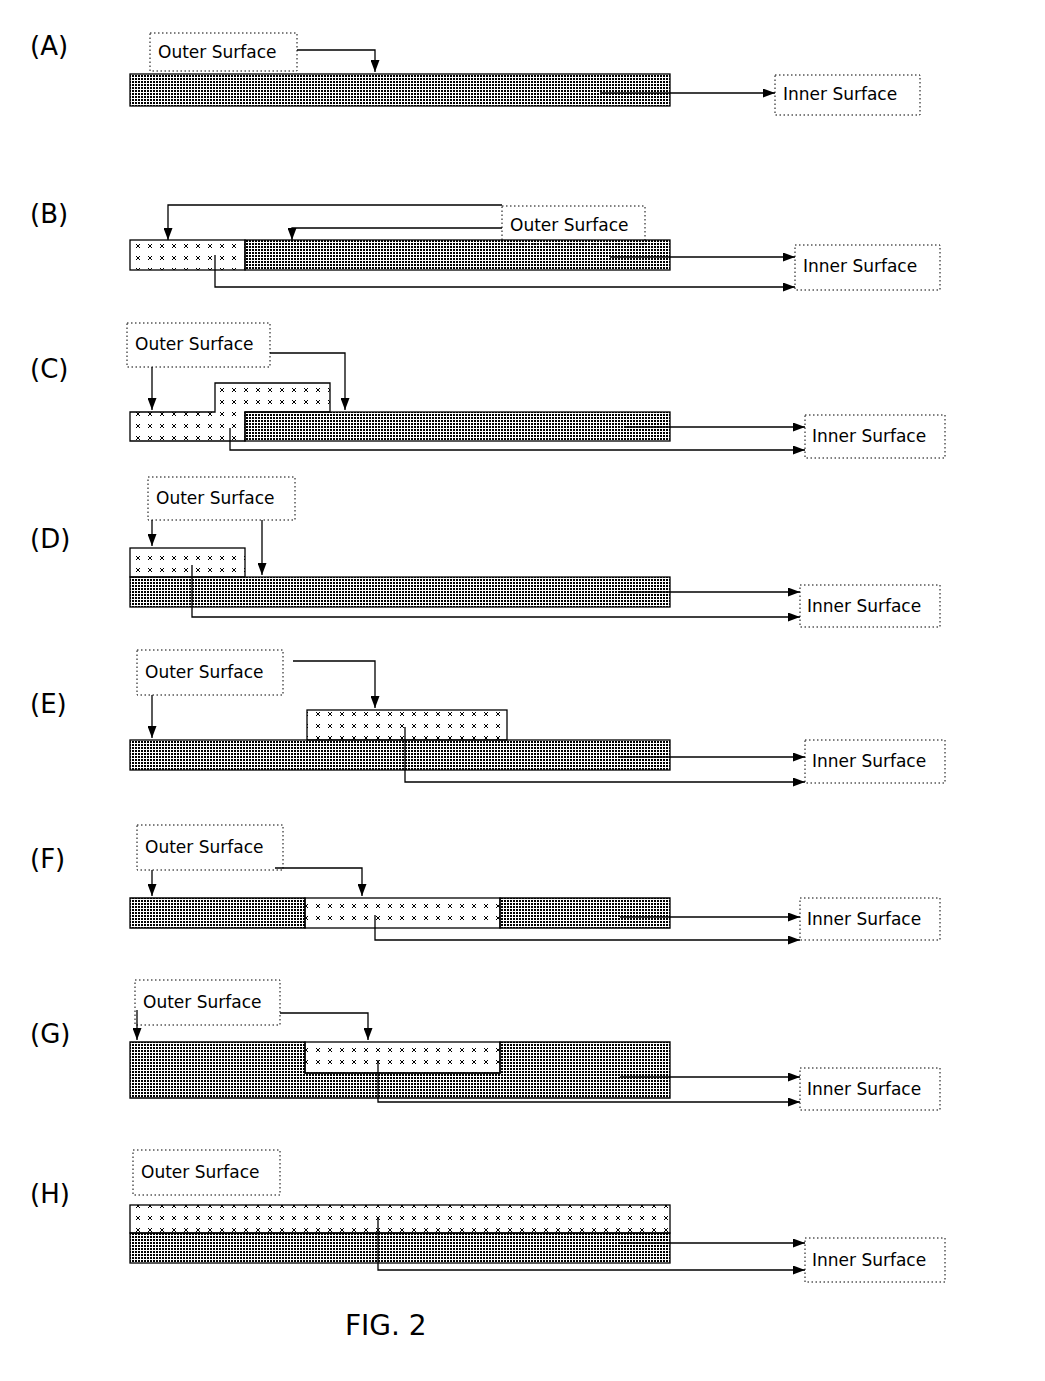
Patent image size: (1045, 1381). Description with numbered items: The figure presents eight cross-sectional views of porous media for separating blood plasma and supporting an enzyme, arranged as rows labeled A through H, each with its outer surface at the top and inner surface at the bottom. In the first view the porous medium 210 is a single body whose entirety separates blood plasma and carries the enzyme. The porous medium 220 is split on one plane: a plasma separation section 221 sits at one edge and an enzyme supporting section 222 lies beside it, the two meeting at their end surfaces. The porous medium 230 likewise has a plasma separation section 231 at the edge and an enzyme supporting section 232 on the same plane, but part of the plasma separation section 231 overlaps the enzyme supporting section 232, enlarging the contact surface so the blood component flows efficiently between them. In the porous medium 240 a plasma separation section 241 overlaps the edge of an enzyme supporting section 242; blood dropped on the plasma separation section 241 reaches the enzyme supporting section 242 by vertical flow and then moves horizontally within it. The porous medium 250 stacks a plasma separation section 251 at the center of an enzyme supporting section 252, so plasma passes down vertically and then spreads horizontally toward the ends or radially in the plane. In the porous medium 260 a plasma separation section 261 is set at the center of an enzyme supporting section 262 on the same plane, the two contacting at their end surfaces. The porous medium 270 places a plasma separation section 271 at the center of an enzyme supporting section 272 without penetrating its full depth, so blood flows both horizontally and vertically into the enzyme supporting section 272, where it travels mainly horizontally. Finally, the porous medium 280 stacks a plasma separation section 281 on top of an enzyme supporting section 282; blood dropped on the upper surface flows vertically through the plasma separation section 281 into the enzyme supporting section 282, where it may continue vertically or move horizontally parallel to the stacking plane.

The porous medium 210 is at (658, 59).
The porous medium 220 is at (451, 221).
The plasma separation section 221 is at (183, 240).
The enzyme supporting section 222 is at (378, 240).
The porous medium 230 is at (451, 381).
The plasma separation section 231 is at (245, 385).
The enzyme supporting section 232 is at (440, 412).
The porous medium 240 is at (451, 549).
The plasma separation section 241 is at (245, 548).
The enzyme supporting section 242 is at (440, 577).
The porous medium 250 is at (451, 711).
The plasma separation section 251 is at (410, 712).
The enzyme supporting section 252 is at (163, 740).
The porous medium 260 is at (451, 880).
The plasma separation section 261 is at (410, 898).
The enzyme supporting section 262 is at (212, 898).
The porous medium 270 is at (451, 1035).
The plasma separation section 271 is at (410, 1042).
The enzyme supporting section 272 is at (213, 1042).
The porous medium 280 is at (451, 1200).
The plasma separation section 281 is at (435, 1230).
The enzyme supporting section 282 is at (237, 1205).